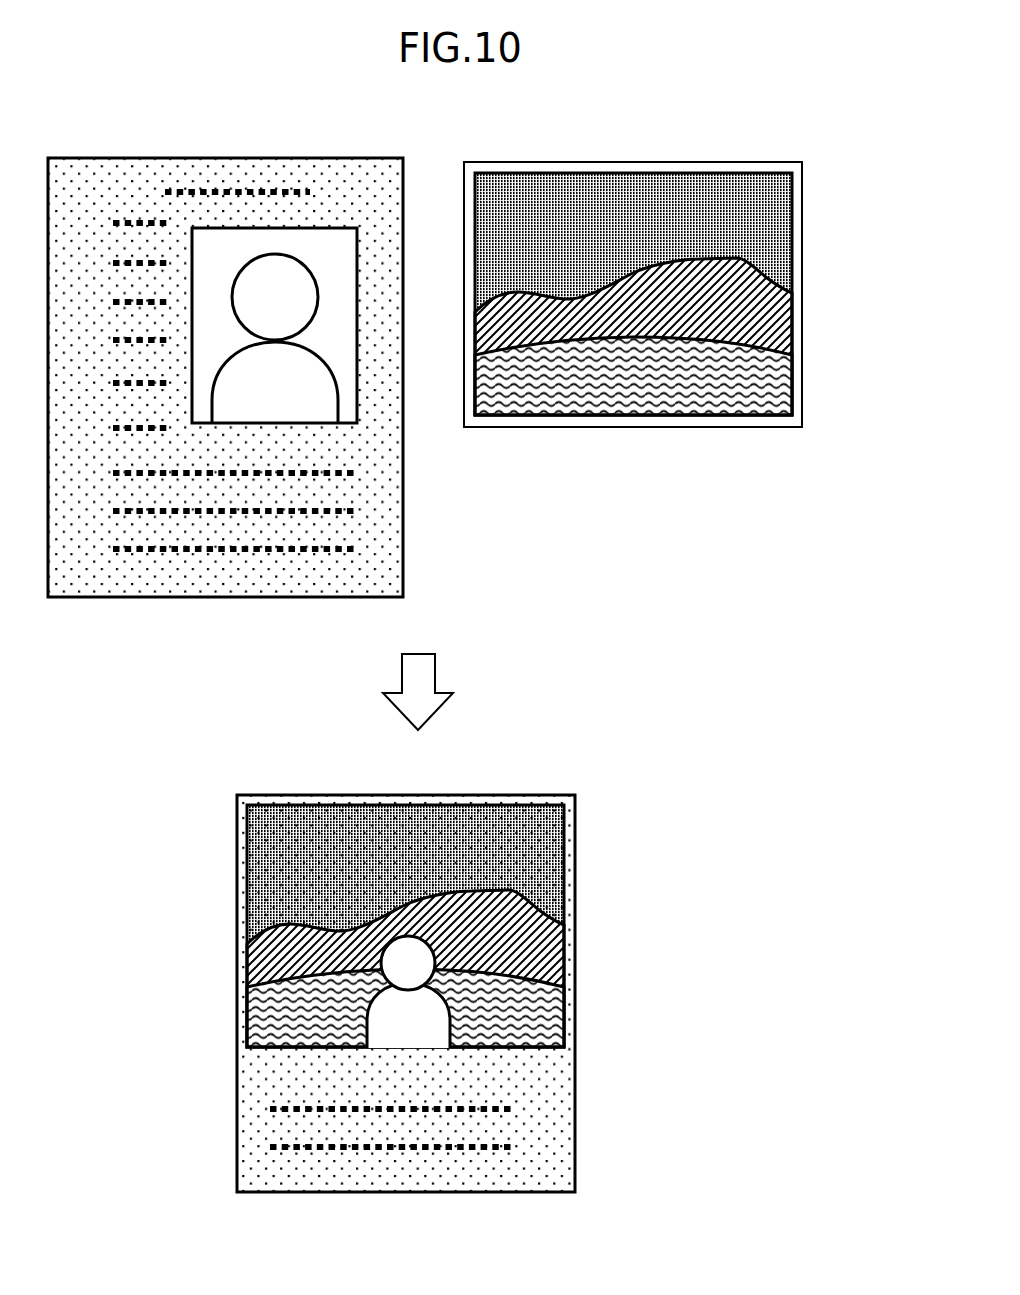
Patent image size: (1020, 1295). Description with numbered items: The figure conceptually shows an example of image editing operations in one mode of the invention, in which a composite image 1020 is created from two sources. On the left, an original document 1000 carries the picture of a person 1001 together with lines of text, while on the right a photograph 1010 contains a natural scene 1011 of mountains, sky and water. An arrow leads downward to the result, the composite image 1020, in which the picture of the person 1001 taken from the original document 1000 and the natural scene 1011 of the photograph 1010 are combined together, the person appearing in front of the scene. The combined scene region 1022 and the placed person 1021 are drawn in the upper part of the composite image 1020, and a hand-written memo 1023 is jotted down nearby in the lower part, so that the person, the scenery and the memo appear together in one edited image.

The original document 1000 is at (402, 158).
The picture of a person 1001 is at (297, 257).
The photograph 1010 is at (803, 163).
The natural scene 1011 is at (793, 242).
The composite image 1020 is at (575, 795).
The extracted person image 1021 is at (402, 937).
The background image 1022 is at (443, 805).
The hand-written memo 1023 is at (483, 1103).